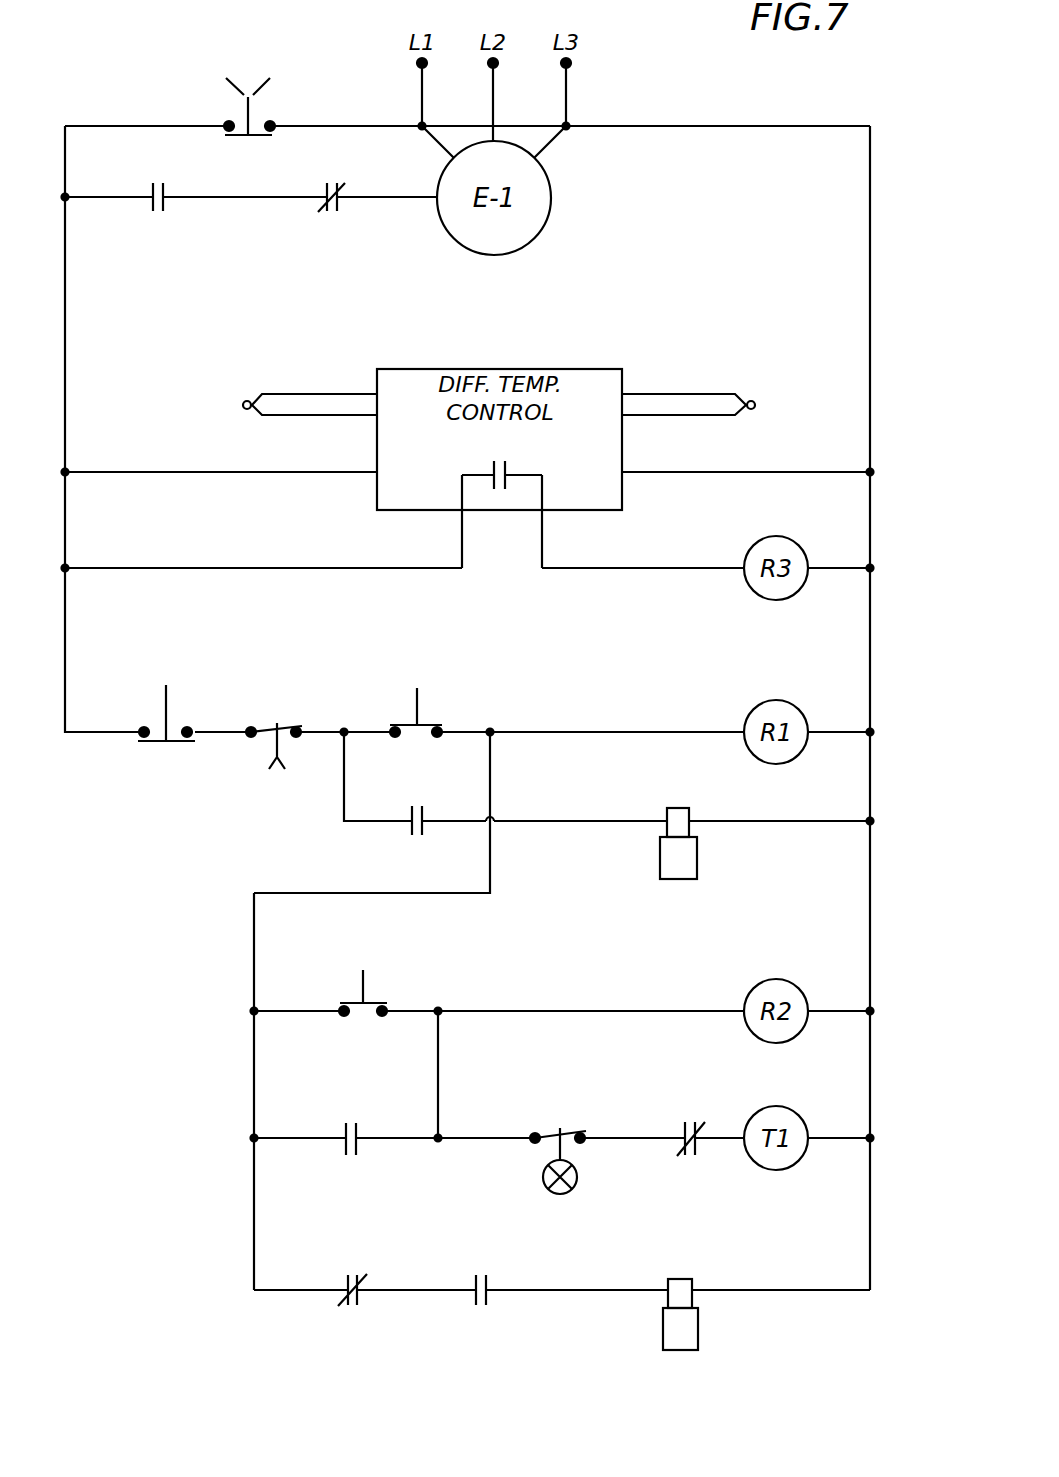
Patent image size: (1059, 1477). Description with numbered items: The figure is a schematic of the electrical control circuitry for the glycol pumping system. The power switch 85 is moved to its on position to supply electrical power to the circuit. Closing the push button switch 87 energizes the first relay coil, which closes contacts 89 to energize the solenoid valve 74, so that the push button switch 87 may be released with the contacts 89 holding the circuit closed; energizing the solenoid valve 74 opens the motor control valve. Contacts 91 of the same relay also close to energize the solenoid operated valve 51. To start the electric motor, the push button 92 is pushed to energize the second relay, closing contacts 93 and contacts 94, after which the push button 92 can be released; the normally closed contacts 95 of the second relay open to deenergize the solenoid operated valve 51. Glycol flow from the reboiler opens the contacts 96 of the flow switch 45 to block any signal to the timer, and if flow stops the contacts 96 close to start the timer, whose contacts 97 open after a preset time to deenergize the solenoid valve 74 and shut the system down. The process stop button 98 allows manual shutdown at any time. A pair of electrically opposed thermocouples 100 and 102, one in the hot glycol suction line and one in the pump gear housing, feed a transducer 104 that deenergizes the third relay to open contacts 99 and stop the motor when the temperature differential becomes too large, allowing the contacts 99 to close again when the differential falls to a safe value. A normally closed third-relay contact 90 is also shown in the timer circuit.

The power switch 85 is at (251, 112).
The contacts of relay R2 94 is at (165, 205).
The contacts of relay R3 99 is at (339, 205).
The thermocouple 100 is at (258, 393).
The thermocouple 102 is at (735, 393).
The transducer 104 is at (622, 490).
The process stop button 98 is at (153, 743).
The contacts for timer T1 97 is at (272, 748).
The push button switch 87 is at (432, 720).
The contacts of relay R1 89 is at (408, 830).
The solenoid valve 74 is at (697, 858).
The push button 92 is at (378, 1000).
The contacts of relay R2 93 is at (342, 1150).
The contacts of flow switch 96 is at (570, 1130).
The flow switch 45 is at (577, 1168).
The relay R3 normally closed contact 90 is at (700, 1150).
The normally closed contacts of relay R2 95 is at (360, 1295).
The contacts of coil R1 91 is at (490, 1300).
The solenoid operated valve 51 is at (698, 1325).